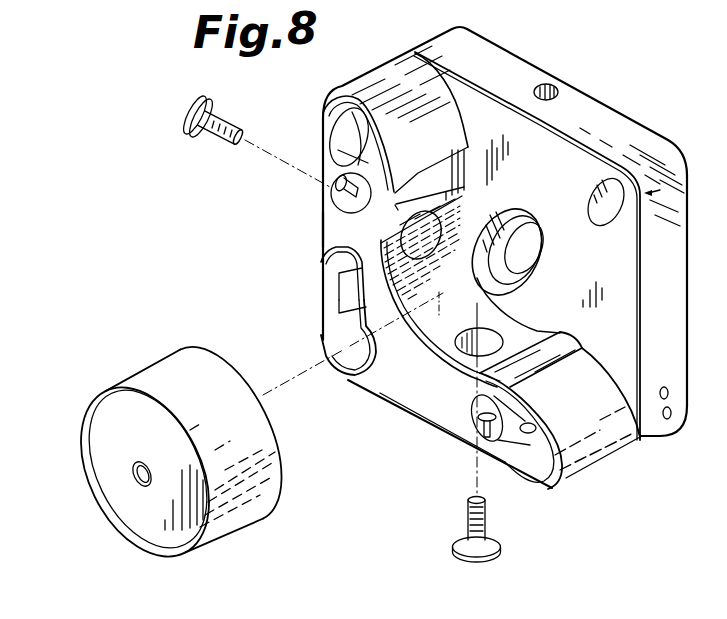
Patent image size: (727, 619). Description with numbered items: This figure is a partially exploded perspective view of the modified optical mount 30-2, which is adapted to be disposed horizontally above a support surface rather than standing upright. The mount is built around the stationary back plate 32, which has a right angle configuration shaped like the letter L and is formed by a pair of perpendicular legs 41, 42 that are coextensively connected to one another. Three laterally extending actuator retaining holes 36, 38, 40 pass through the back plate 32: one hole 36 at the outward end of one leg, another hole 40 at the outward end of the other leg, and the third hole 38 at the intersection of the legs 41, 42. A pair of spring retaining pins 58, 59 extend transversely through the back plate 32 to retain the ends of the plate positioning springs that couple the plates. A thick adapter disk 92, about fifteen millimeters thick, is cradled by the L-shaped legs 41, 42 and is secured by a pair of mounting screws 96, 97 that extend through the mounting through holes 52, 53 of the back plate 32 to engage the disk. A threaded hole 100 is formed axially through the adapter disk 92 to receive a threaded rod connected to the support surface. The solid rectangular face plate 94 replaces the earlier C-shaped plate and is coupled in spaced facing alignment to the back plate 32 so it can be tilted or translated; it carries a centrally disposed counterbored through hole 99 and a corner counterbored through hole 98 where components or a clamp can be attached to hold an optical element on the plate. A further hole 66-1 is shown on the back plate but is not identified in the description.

The optical mount 30-2 is at (556, 66).
The stationary back plate 32 is at (403, 410).
The actuator retaining hole 36 is at (377, 120).
The actuator retaining hole 38 is at (336, 332).
The actuator retaining hole 40 is at (547, 464).
The leg 41 is at (393, 380).
The leg 42 is at (333, 227).
The mounting through hole 52 is at (356, 258).
The mounting through hole 53 is at (470, 358).
The spring retaining pin 58 is at (334, 201).
The spring retaining pin 59 is at (470, 440).
The threaded hole 66-1 is at (545, 85).
The adapter disk 92 is at (127, 520).
The rectangular face plate 94 is at (632, 121).
The mounting screw 96 is at (178, 124).
The mounting screw 97 is at (455, 549).
The counterbored through hole 98 is at (608, 217).
The counterbored through hole 99 is at (517, 232).
The threaded hole 100 is at (132, 478).